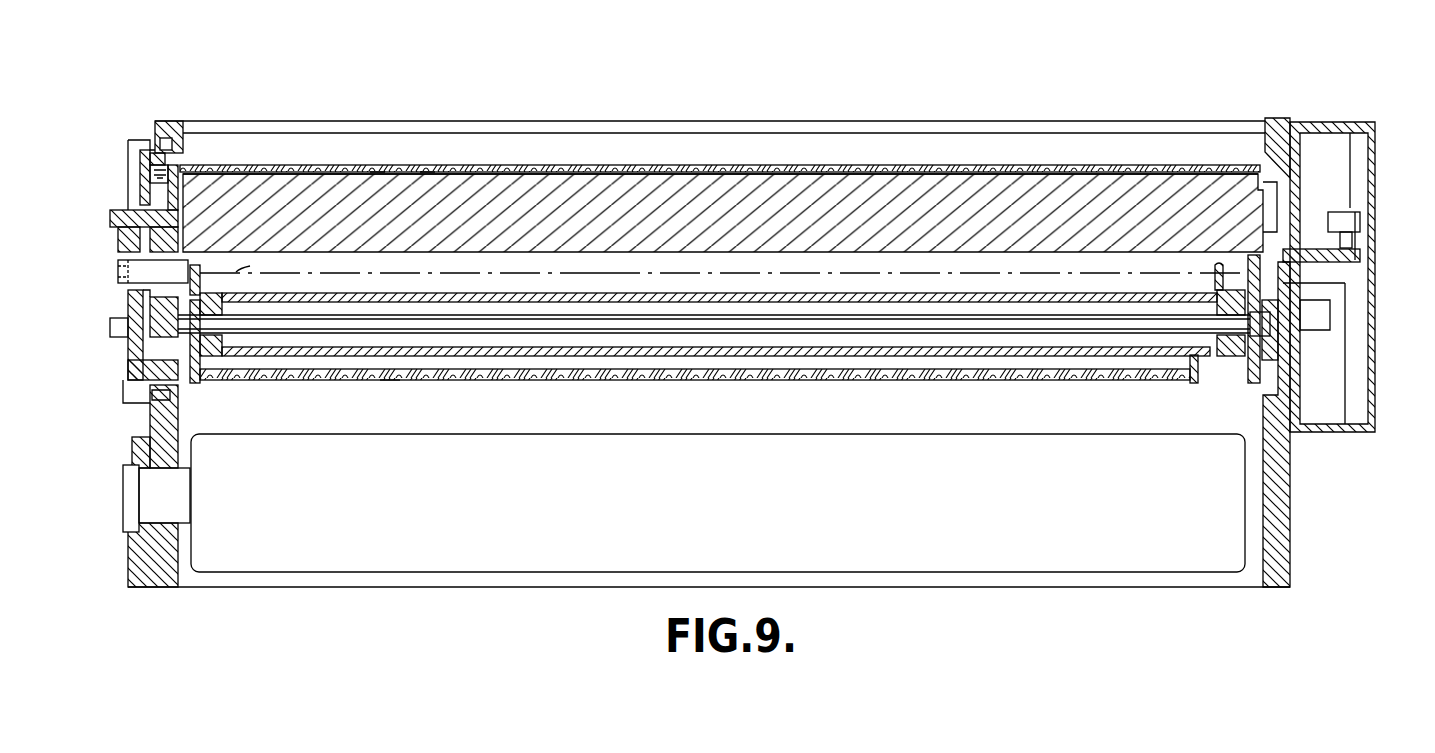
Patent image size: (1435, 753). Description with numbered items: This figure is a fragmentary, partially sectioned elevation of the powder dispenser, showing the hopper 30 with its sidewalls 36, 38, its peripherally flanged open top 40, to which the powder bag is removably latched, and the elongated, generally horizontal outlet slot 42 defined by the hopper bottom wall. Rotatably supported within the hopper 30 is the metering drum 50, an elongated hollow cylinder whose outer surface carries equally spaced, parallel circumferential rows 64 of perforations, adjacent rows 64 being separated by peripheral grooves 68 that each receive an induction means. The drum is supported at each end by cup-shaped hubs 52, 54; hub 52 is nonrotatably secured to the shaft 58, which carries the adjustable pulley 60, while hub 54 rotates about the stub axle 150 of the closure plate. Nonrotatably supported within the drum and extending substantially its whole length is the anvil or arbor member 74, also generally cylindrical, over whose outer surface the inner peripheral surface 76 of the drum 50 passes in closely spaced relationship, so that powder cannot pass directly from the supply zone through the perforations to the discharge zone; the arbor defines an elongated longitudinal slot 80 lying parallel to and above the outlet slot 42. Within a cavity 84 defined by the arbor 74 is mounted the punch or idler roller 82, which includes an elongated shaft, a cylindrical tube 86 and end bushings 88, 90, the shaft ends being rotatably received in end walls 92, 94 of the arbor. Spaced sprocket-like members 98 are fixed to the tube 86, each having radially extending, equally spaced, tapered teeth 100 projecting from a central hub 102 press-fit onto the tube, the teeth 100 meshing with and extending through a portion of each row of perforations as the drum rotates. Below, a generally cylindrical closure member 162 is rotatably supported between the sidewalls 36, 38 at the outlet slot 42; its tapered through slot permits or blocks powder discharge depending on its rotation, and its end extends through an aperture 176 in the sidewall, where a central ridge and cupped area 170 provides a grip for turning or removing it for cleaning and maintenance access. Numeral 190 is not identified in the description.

The hopper 30 is at (1078, 122).
The sidewall 36 is at (1292, 468).
The sidewall 38 is at (154, 126).
The peripherally flanged open top 40 is at (175, 120).
The outlet slot 42 is at (359, 589).
The metering drum 50 is at (884, 162).
The cup-shaped hub 52 is at (1286, 168).
The cup-shaped hub 54 is at (150, 178).
The shaft 58 is at (1300, 250).
The adjustable pulley 60 is at (1358, 214).
The rows of perforations 64 is at (258, 378).
The peripheral grooves 68 is at (426, 163).
The anvil or arbor member 74 is at (683, 195).
The inner peripheral surface 76 is at (580, 182).
The slot 80 is at (385, 386).
The punch roller or idler roller 82 is at (570, 276).
The cavity 84 is at (810, 284).
The cylindrical tube 86 is at (990, 292).
The end bushing 88 is at (224, 345).
The end bushing 90 is at (1238, 335).
The end wall 92 is at (150, 335).
The end wall 94 is at (1268, 338).
The sprocket-like members 98 is at (230, 272).
The teeth 100 is at (204, 262).
The central hub 102 is at (212, 284).
The stub axle 150 is at (133, 272).
The closure member 162 is at (958, 500).
The central ridge and cupped area 170 is at (128, 487).
The aperture 176 is at (132, 446).
The right box 190 is at (1345, 348).